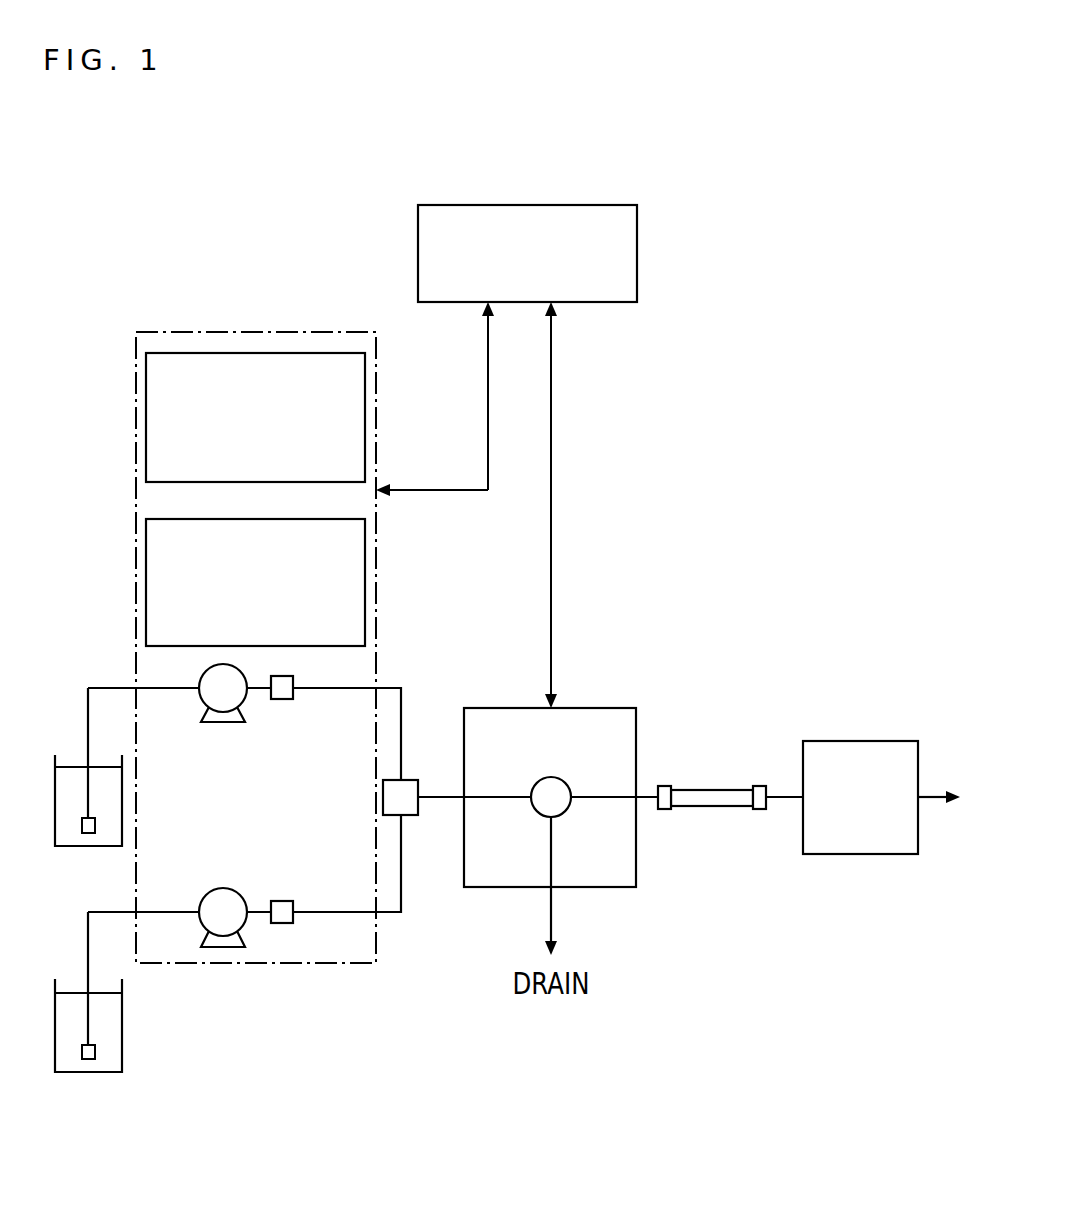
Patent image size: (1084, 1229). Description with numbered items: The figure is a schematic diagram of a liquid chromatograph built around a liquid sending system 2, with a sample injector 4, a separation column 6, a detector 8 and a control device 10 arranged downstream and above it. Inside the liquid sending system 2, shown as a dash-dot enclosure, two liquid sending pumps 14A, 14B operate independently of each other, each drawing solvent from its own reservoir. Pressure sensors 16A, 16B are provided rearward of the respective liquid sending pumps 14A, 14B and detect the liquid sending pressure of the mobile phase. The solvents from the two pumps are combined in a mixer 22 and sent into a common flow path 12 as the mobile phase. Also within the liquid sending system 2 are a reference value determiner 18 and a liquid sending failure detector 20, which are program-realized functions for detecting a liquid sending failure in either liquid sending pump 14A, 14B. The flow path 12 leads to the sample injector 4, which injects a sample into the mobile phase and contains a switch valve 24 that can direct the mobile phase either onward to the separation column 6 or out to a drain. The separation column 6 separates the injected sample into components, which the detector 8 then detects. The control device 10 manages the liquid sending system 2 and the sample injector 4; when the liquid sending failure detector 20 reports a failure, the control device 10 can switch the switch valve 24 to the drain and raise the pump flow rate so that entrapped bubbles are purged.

The liquid sending system 2 is at (252, 325).
The sample injector 4 is at (597, 707).
The separation column 6 is at (706, 788).
The detector 8 is at (868, 740).
The control device 10 is at (640, 223).
The flow path 12 is at (427, 794).
The liquid sending pump 14A is at (223, 723).
The liquid sending pump 14B is at (218, 888).
The pressure sensor 16A is at (282, 700).
The pressure sensor 16B is at (278, 898).
The reference value determiner 18 is at (146, 418).
The liquid sending failure detector 20 is at (146, 565).
The mixer 22 is at (405, 780).
The switch valve 24 is at (556, 778).